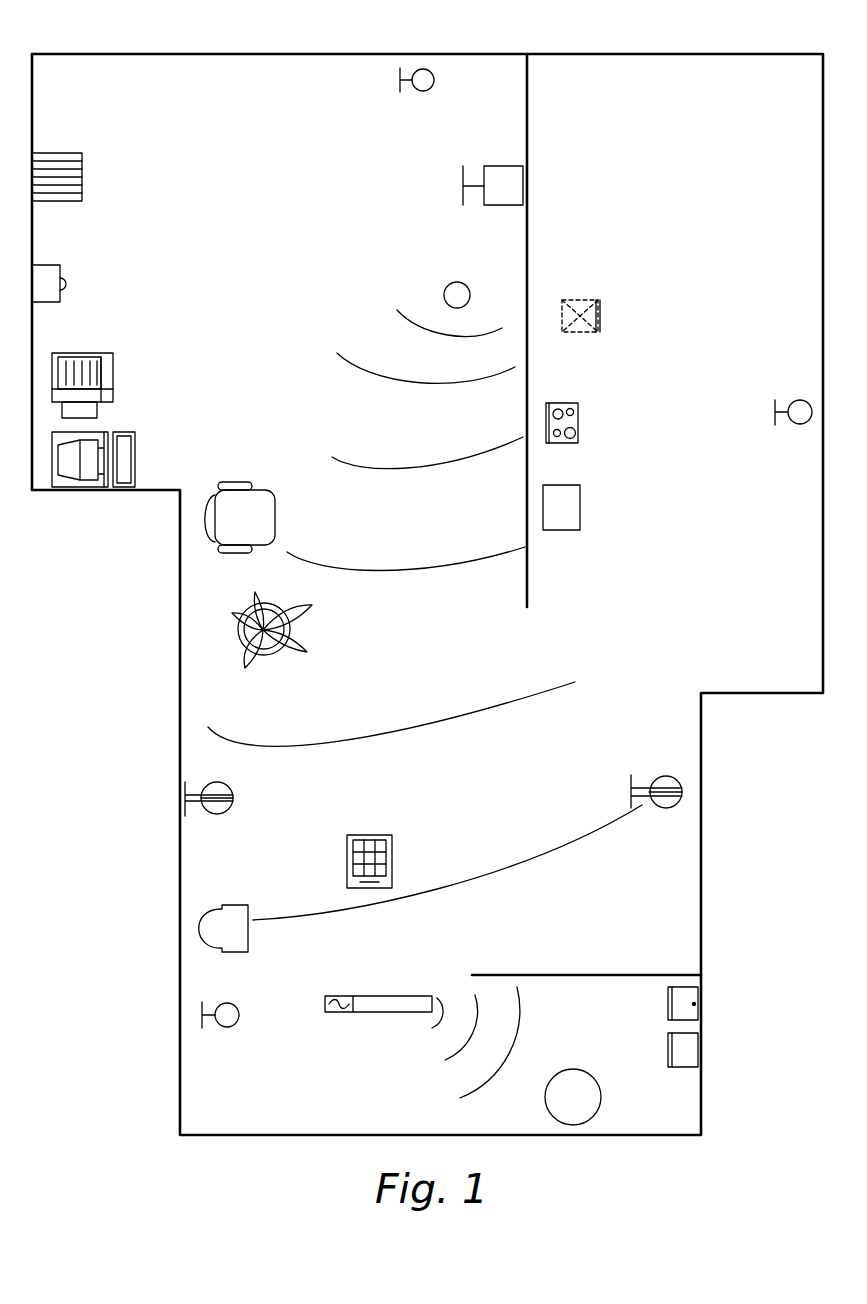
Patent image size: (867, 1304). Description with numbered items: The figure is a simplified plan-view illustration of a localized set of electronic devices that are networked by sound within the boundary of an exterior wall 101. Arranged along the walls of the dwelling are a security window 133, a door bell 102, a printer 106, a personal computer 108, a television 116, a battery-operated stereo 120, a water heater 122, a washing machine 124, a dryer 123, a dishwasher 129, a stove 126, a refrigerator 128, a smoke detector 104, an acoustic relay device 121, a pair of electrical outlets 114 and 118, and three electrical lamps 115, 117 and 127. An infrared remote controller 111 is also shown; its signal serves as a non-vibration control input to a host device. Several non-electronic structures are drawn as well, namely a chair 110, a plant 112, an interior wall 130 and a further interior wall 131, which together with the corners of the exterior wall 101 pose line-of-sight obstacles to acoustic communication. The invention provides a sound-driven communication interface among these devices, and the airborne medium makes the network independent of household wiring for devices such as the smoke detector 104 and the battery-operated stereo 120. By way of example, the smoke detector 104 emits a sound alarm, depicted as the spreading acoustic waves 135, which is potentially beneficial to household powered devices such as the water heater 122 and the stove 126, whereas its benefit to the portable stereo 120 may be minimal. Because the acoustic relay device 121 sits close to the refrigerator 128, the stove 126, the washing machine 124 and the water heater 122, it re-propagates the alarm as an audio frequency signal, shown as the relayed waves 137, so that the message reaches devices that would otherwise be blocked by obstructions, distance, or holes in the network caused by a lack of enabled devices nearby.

The exterior wall 101 is at (767, 54).
The door bell 102 is at (60, 272).
The smoke detector 104 is at (444, 295).
The printer 106 is at (113, 365).
The personal computer 108 is at (135, 446).
The chair 110 is at (275, 512).
The remote controller 111 is at (392, 845).
The plant 112 is at (268, 656).
The electrical outlet 114 is at (233, 798).
The electrical lamp 115 is at (230, 1027).
The television 116 is at (232, 905).
The electrical lamp 117 is at (805, 400).
The electrical outlet 118 is at (662, 777).
The battery-operated stereo 120 is at (511, 231).
The acoustic relay device 121 is at (368, 1012).
The water heater 122 is at (601, 1097).
The dryer 123 is at (668, 1050).
The washing machine 124 is at (668, 1005).
The stove 126 is at (578, 425).
The electrical lamp 127 is at (425, 91).
The refrigerator 128 is at (580, 508).
The dishwasher 129 is at (600, 312).
The interior wall 130 is at (527, 257).
The interior wall 131 is at (575, 975).
The security window 133 is at (82, 172).
The acoustic signal waves 135 is at (392, 463).
The acoustic signal waves 137 is at (508, 1060).